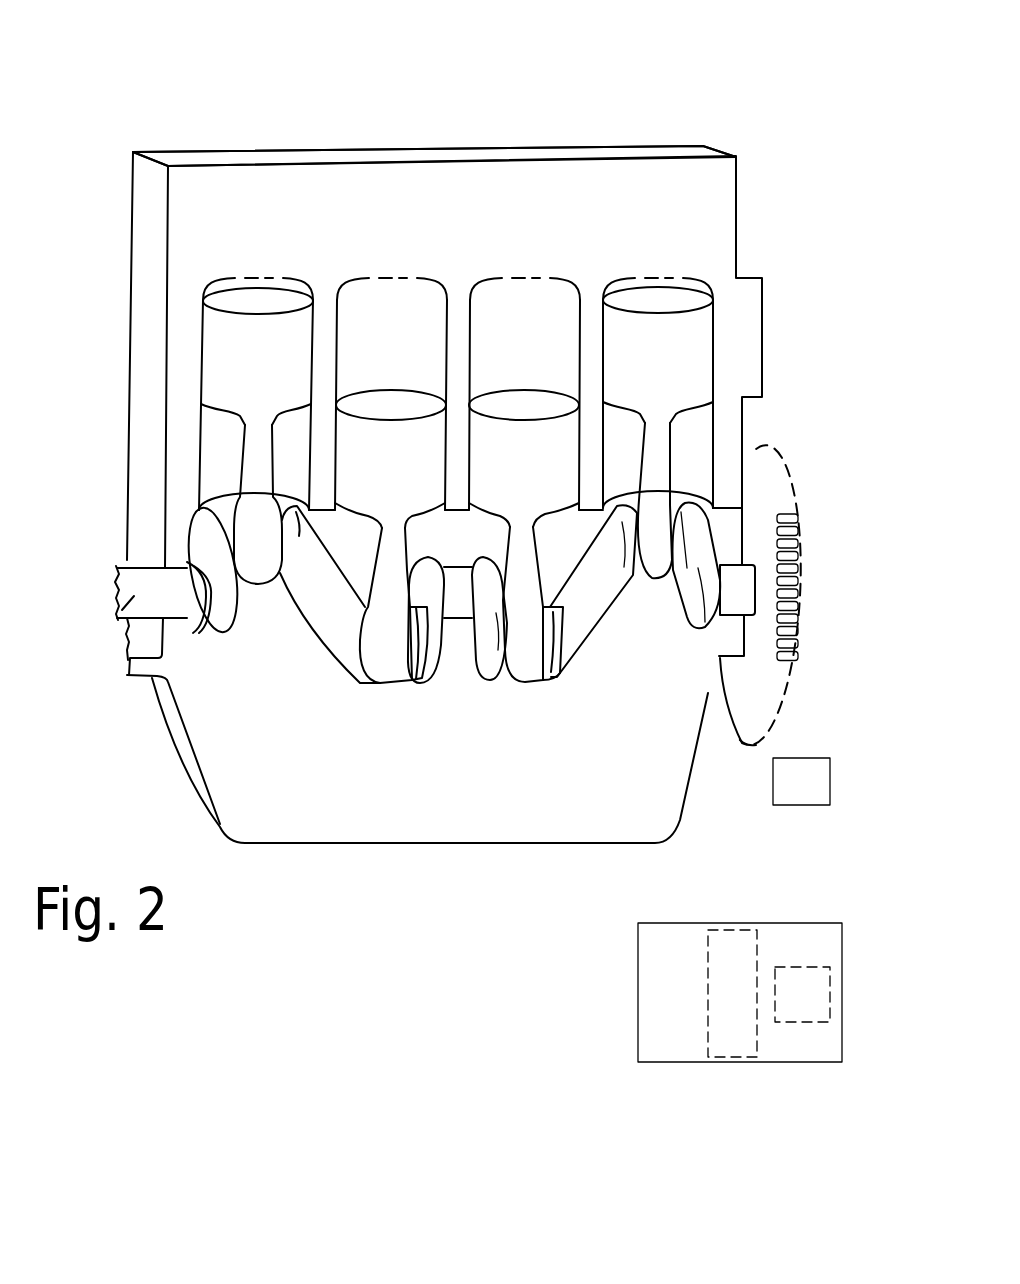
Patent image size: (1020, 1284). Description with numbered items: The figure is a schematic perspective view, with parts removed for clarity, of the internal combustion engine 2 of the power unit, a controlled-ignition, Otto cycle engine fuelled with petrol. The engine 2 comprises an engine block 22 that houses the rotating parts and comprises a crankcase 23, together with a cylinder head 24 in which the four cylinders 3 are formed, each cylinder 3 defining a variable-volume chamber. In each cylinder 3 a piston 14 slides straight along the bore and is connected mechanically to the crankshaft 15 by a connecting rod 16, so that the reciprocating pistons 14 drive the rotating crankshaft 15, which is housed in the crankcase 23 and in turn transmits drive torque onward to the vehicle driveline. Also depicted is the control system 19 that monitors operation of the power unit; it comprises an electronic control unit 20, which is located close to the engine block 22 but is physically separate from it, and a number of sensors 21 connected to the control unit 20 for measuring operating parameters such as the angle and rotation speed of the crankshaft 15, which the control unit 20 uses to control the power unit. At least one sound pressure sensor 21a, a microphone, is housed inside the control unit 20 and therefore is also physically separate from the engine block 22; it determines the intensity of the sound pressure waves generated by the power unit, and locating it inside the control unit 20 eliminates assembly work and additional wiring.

The internal combustion engine 2 is at (358, 893).
The cylinder 3 is at (214, 452).
The piston 14 is at (230, 362).
The crankshaft 15 is at (118, 620).
The connecting rod 16 is at (660, 443).
The control system 19 is at (750, 1087).
The control unit 20 is at (743, 1002).
The sensor 21 is at (813, 792).
The sound pressure sensor 21a is at (820, 1005).
The engine block 22 is at (347, 119).
The crankcase 23 is at (653, 820).
The cylinder head 24 is at (712, 218).